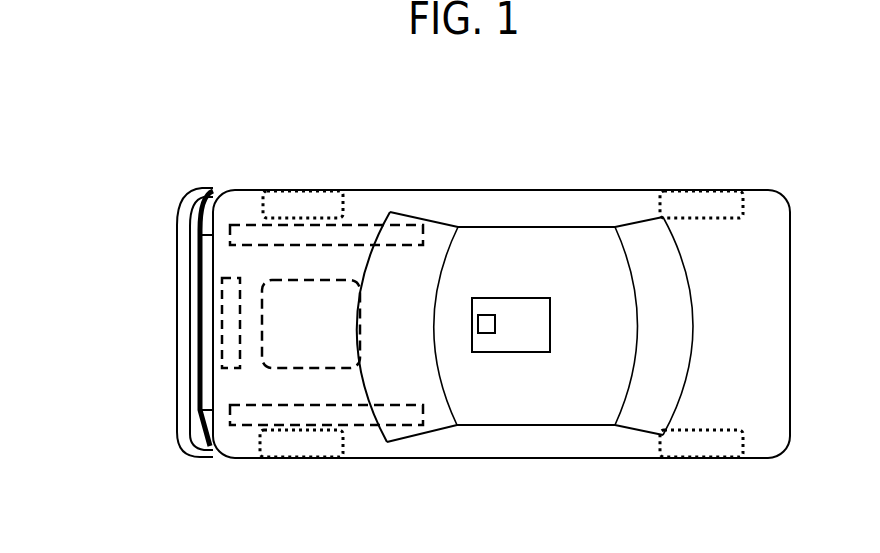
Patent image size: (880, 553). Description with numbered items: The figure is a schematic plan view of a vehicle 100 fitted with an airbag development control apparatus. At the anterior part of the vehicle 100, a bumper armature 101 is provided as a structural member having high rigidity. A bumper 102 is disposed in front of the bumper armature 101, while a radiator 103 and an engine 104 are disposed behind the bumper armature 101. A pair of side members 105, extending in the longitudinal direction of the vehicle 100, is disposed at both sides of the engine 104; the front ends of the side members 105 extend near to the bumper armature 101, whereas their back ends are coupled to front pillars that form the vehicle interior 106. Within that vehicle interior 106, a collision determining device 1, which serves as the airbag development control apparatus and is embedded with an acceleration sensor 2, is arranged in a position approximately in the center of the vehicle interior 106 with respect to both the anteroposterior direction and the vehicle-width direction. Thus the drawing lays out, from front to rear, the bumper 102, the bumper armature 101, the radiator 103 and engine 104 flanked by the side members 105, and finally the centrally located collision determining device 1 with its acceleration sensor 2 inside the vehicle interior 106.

The collision determining device 1 is at (520, 355).
The acceleration sensor 2 is at (488, 315).
The vehicle 100 is at (497, 190).
The bumper armature 101 is at (198, 252).
The bumper 102 is at (178, 316).
The radiator 103 is at (223, 335).
The engine 104 is at (303, 338).
The side members 105 is at (353, 232).
The vehicle interior 106 is at (583, 246).